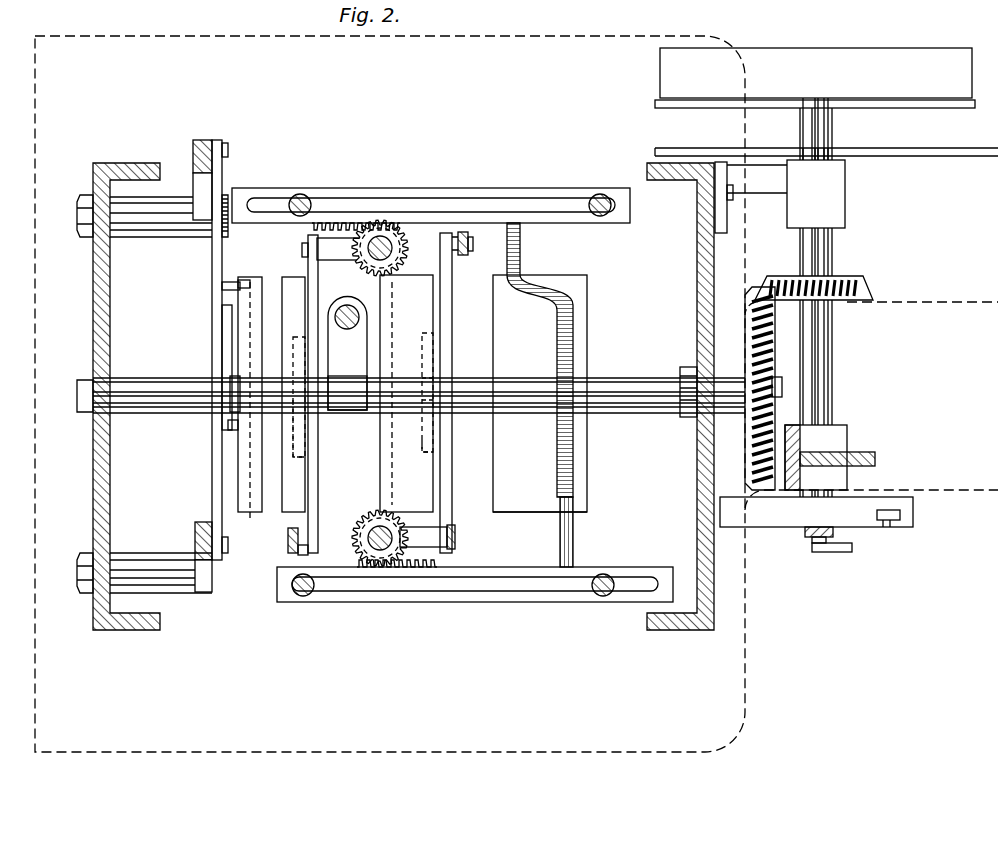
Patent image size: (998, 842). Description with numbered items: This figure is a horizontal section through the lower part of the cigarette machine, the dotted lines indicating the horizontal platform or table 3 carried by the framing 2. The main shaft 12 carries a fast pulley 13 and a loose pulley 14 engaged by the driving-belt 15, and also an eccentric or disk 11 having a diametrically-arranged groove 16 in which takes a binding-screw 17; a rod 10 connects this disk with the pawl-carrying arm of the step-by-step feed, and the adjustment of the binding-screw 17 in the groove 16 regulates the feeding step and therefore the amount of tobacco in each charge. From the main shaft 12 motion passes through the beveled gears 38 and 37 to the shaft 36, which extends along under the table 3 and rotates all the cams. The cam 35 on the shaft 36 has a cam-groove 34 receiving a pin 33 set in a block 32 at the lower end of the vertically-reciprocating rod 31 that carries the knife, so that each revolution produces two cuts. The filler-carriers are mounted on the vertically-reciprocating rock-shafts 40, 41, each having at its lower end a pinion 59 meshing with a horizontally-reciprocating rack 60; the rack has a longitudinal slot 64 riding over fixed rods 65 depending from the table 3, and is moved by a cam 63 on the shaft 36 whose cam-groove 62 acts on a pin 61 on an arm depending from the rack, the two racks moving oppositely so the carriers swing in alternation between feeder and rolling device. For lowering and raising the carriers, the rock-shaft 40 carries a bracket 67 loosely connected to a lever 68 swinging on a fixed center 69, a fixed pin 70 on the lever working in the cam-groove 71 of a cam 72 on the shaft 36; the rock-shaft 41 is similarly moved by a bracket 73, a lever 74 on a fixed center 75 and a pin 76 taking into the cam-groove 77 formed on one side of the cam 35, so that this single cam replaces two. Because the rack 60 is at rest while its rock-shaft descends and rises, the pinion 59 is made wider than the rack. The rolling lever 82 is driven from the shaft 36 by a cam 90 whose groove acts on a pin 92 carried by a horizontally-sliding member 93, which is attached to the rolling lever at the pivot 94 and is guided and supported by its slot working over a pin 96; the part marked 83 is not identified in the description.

The framing 2 is at (145, 632).
The horizontal platform or table 3 is at (470, 38).
The rod 10 is at (805, 532).
The eccentric or disk 11 is at (913, 515).
The main shaft 12 is at (833, 390).
The fast pulley 13 is at (972, 110).
The loose pulley 14 is at (925, 56).
The driving-belt 15 is at (972, 160).
The diametrically-arranged groove 16 is at (887, 527).
The binding-screw 17 is at (836, 552).
The vertically-reciprocating rod 31 is at (347, 306).
The block 32 is at (347, 354).
The pin 33 is at (347, 393).
The cam-groove 34 is at (412, 392).
The cam 35 is at (430, 292).
The shaft 36 is at (175, 408).
The beveled gear 37 is at (747, 388).
The beveled gear 38 is at (852, 275).
The rock-shaft 40 is at (392, 248).
The rock-shaft 41 is at (372, 530).
The pinion 59 is at (400, 262).
The rack 60 is at (388, 190).
The pin 61 is at (520, 262).
The cam-groove 62 is at (556, 462).
The cam 63 is at (522, 500).
The longitudinal slot 64 is at (438, 200).
The fixed rods 65 is at (300, 194).
The bracket 67 is at (342, 249).
The lever 68 is at (318, 440).
The fixed center 69 is at (296, 556).
The fixed pin 70 is at (293, 385).
The cam-groove 71 is at (293, 340).
The cam 72 is at (290, 278).
The bracket 73 is at (427, 537).
The lever 74 is at (452, 478).
The fixed center 75 is at (464, 255).
The pin 76 is at (420, 408).
The cam-groove 77 is at (413, 384).
The rolling lever 82 is at (193, 152).
The rod 83 is at (158, 232).
The cam 90 is at (250, 512).
The pin 92 is at (230, 282).
The horizontally-sliding frame or member 93 is at (212, 341).
The pivot 94 is at (229, 150).
The pin 96 is at (240, 388).